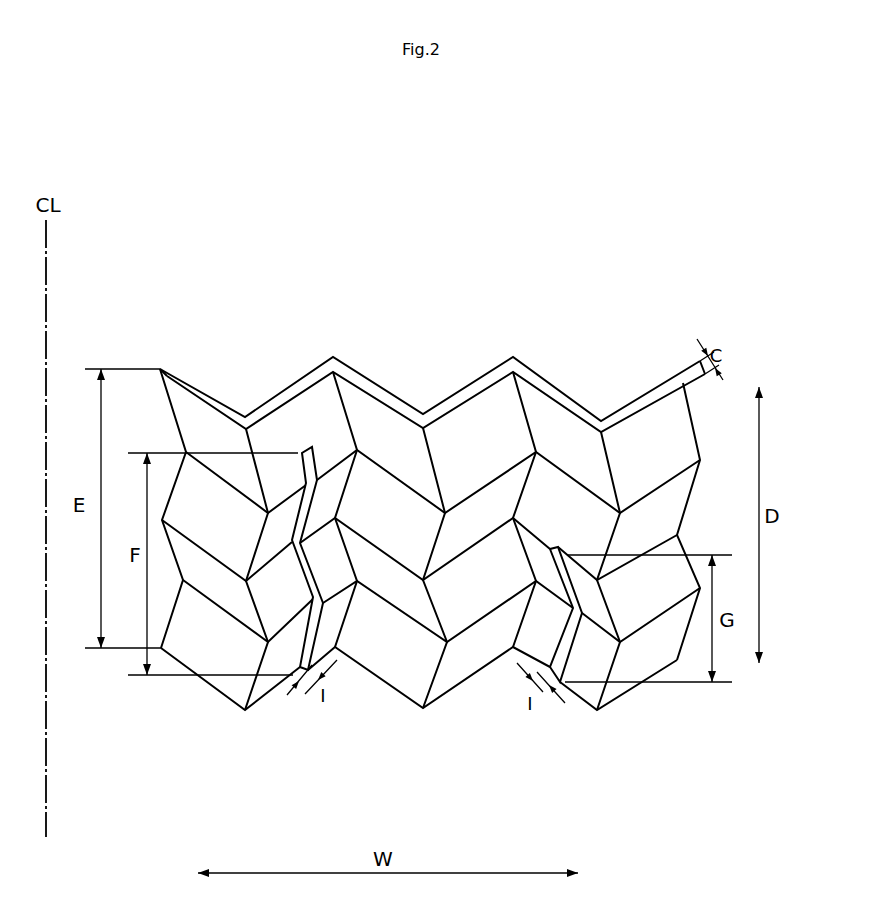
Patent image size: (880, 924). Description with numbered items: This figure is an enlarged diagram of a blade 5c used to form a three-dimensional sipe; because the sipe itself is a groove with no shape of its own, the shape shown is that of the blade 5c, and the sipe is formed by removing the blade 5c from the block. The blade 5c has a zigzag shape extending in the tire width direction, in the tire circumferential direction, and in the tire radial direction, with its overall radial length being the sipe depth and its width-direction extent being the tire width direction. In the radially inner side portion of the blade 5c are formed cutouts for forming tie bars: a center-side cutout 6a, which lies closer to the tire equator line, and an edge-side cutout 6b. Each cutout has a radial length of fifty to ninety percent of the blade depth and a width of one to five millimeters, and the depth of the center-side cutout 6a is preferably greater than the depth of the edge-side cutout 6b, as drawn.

The blade 5c is at (572, 293).
The center-side cutout 6a is at (313, 636).
The edge-side cutout 6b is at (562, 647).